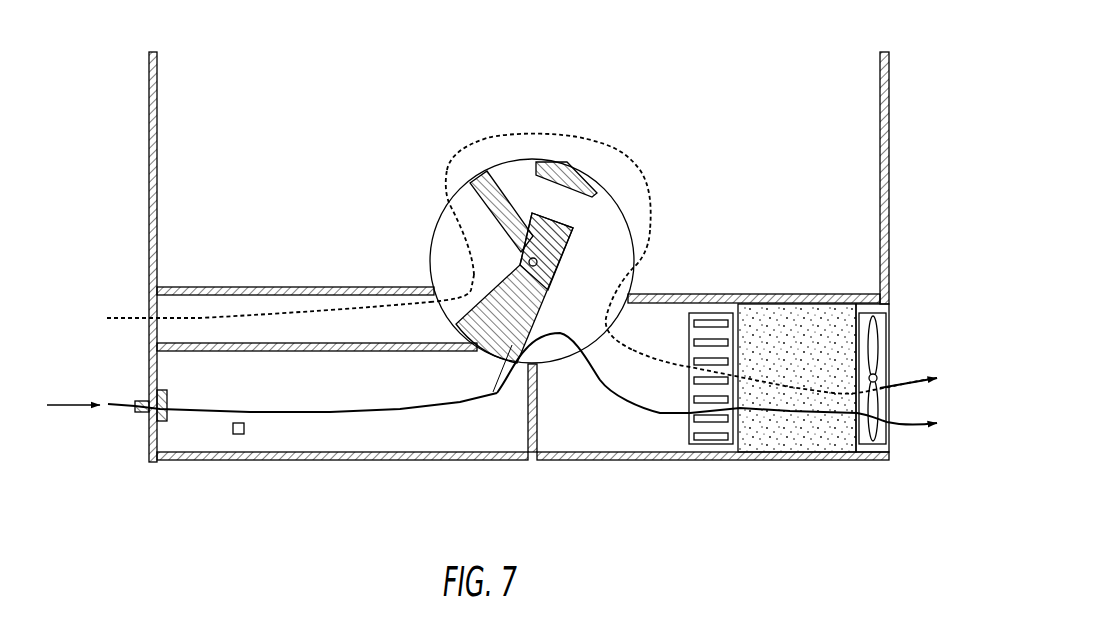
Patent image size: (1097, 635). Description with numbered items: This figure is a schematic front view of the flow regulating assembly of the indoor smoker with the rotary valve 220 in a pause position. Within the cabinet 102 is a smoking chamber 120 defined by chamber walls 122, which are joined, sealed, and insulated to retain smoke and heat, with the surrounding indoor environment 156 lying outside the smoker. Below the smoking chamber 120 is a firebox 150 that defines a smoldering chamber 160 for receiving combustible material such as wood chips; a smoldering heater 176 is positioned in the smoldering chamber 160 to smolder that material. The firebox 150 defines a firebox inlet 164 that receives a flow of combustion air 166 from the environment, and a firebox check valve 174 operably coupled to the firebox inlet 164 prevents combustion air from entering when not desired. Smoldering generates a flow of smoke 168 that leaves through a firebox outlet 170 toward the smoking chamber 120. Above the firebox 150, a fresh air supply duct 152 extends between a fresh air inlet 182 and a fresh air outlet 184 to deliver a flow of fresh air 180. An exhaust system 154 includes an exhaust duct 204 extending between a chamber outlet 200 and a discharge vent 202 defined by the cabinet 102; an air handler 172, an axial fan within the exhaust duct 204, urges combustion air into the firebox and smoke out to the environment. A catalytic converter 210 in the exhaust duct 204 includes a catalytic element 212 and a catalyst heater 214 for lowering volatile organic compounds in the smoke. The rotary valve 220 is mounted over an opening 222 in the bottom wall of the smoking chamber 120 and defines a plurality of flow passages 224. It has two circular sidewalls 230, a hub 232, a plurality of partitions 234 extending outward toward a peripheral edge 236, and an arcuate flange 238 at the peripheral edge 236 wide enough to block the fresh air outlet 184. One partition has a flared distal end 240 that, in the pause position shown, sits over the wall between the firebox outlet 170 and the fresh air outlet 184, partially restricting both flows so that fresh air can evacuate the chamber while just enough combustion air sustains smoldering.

The cabinet 102 is at (922, 152).
The smoking chamber 120 is at (496, 207).
The chamber walls 122 is at (890, 135).
The firebox 150 is at (330, 462).
The fresh air supply duct 152 is at (211, 311).
The exhaust system 154 is at (683, 463).
The indoor environment 156 is at (100, 176).
The smoldering chamber 160 is at (308, 391).
The firebox inlet 164 is at (139, 415).
The flow of combustion air 166 is at (83, 403).
The flow of smoke 168 is at (440, 408).
The firebox outlet 170 is at (497, 304).
The air handler 172 is at (905, 386).
The firebox check valve 174 is at (153, 395).
The smoldering heater 176 is at (245, 430).
The flow of fresh air 180 is at (631, 157).
The fresh air inlet 182 is at (146, 304).
The fresh air outlet 184 is at (441, 320).
The chamber outlet 200 is at (558, 369).
The discharge vent 202 is at (892, 340).
The exhaust duct 204 is at (612, 438).
The catalytic converter 210 is at (822, 387).
The catalytic element 212 is at (800, 328).
The catalyst heater 214 is at (728, 333).
The rotary valve 220 is at (430, 267).
The opening 222 is at (634, 291).
The flow passages 224 is at (442, 229).
The circular sidewalls 230 is at (590, 311).
The hub 232 is at (549, 278).
The partitions 234 is at (502, 191).
The peripheral edge 236 is at (632, 217).
The arcuate flange 238 is at (570, 170).
The flared distal end 240 is at (496, 395).